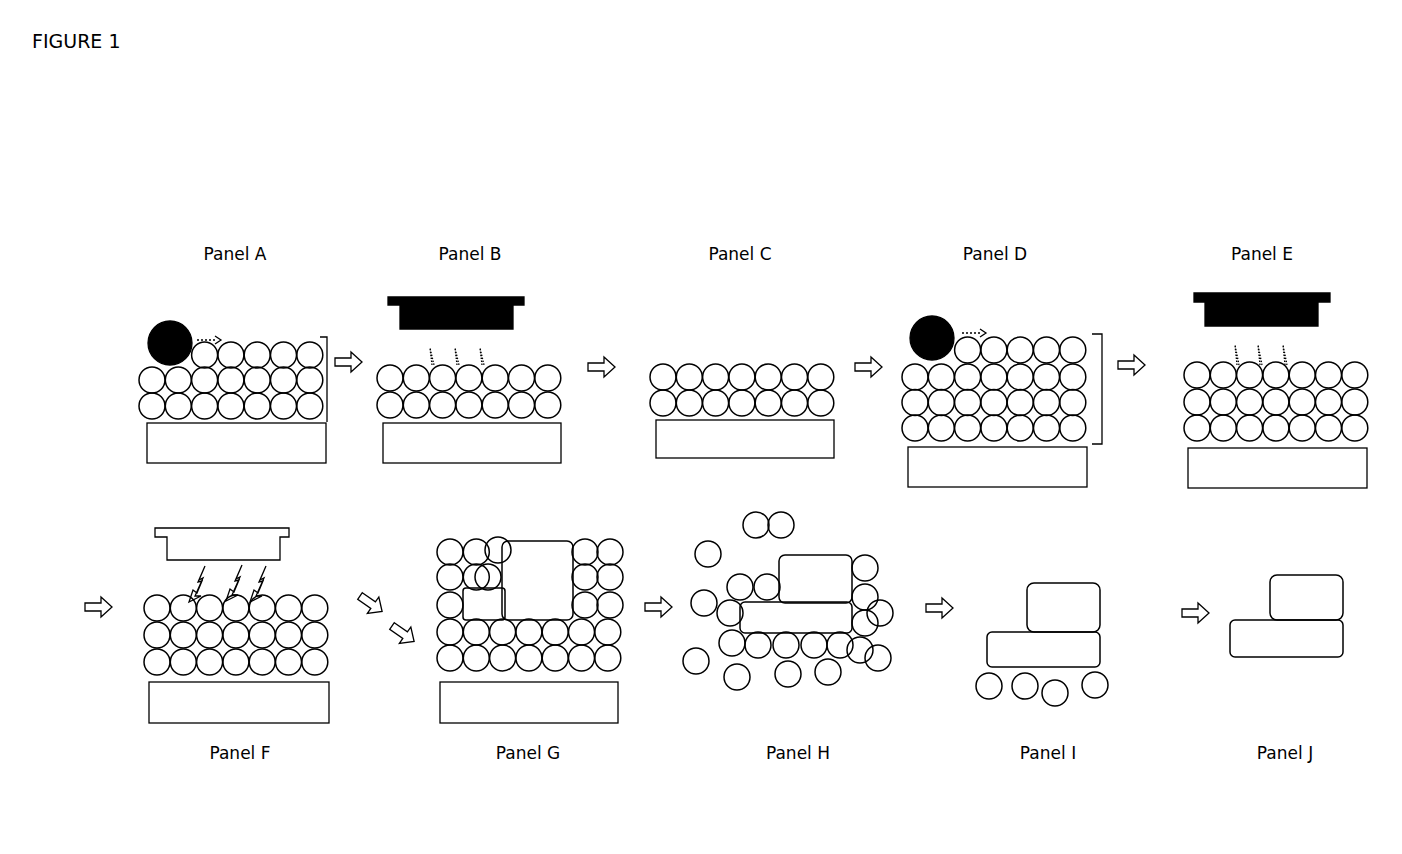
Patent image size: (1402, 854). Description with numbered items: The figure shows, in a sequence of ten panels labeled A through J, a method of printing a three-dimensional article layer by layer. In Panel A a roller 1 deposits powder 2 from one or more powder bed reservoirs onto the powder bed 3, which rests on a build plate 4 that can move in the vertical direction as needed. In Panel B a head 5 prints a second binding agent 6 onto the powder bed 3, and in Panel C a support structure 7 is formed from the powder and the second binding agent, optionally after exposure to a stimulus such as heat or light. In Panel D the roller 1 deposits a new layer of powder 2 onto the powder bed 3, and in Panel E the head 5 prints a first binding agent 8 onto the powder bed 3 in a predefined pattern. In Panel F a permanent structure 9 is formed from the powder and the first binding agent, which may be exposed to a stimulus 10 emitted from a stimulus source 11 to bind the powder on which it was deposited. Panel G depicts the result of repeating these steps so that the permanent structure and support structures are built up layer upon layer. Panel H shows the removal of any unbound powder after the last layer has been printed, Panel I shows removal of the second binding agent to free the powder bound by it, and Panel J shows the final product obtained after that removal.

The roller 1 is at (170, 334).
The powder 2 is at (312, 352).
The powder bed 3 is at (327, 382).
The build plate 4 is at (757, 571).
The head 5 is at (483, 303).
The second binding agent 6 is at (582, 331).
The support structure 7 is at (747, 373).
The first binding agent 8 is at (1262, 360).
The permanent structure 9 is at (187, 610).
The stimulus 10 is at (267, 582).
The stimulus source 11 is at (240, 540).